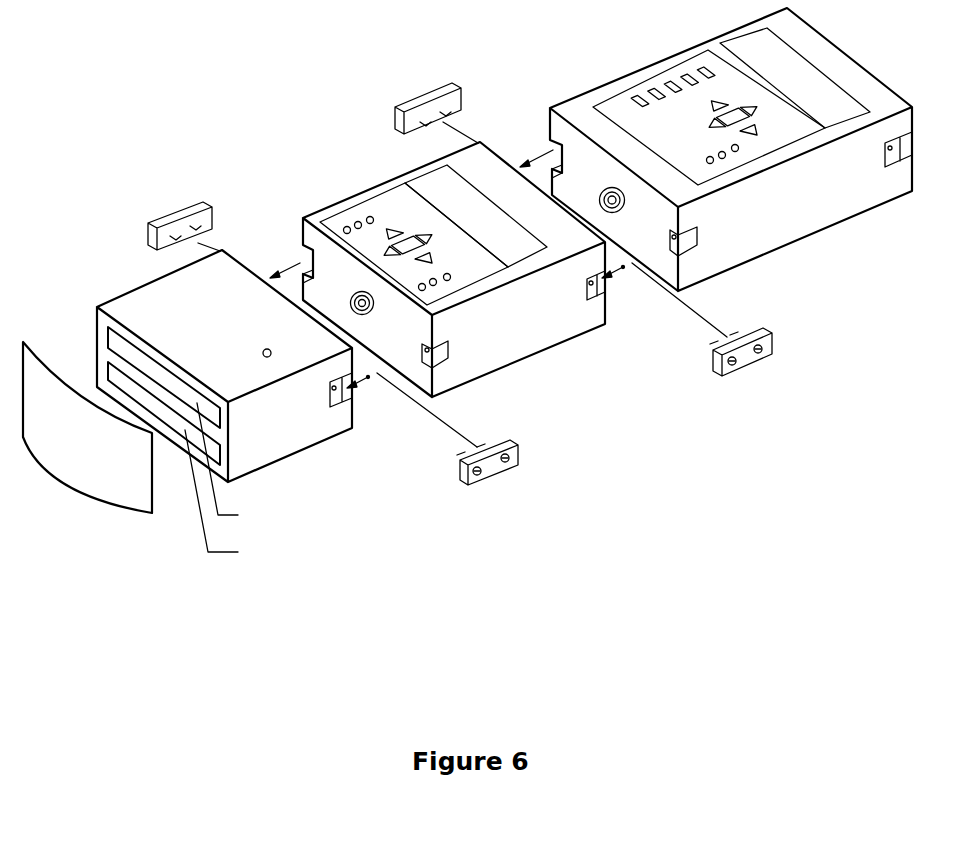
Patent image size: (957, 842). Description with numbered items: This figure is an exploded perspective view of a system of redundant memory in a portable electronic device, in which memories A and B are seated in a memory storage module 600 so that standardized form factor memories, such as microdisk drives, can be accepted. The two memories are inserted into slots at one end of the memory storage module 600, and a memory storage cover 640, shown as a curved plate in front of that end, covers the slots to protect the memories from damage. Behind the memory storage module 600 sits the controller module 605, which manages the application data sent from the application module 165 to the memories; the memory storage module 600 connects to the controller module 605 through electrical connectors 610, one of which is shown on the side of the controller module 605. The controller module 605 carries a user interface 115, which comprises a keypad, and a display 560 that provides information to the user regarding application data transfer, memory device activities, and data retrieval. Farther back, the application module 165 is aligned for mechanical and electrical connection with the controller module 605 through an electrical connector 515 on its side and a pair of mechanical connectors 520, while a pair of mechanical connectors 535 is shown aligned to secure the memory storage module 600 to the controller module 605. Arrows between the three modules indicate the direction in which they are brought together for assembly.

The user interface 115 is at (368, 212).
The application module 165 is at (753, 225).
The electrical connector 515 is at (615, 213).
The mechanical connectors 520 is at (440, 85).
The mechanical connectors 535 is at (189, 210).
The display 560 is at (423, 190).
The memory storage module 600 is at (285, 432).
The controller module 605 is at (520, 342).
The electrical connectors 610 is at (363, 318).
The memory storage cover 640 is at (148, 487).